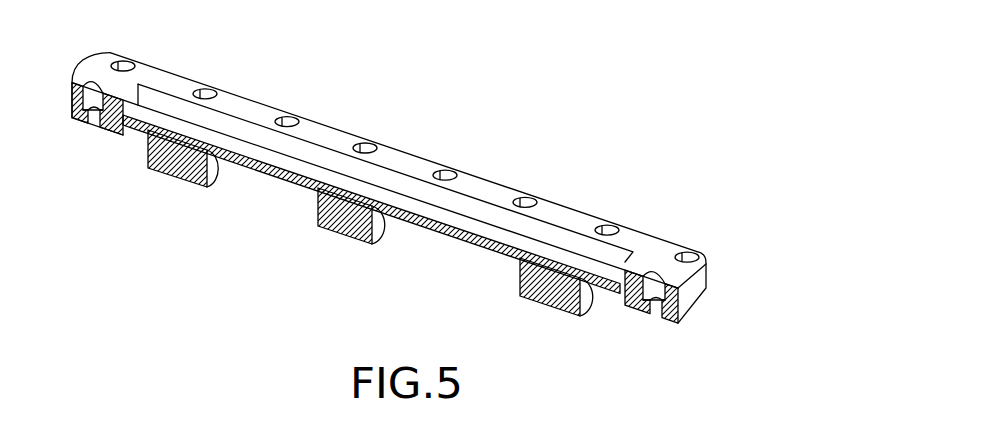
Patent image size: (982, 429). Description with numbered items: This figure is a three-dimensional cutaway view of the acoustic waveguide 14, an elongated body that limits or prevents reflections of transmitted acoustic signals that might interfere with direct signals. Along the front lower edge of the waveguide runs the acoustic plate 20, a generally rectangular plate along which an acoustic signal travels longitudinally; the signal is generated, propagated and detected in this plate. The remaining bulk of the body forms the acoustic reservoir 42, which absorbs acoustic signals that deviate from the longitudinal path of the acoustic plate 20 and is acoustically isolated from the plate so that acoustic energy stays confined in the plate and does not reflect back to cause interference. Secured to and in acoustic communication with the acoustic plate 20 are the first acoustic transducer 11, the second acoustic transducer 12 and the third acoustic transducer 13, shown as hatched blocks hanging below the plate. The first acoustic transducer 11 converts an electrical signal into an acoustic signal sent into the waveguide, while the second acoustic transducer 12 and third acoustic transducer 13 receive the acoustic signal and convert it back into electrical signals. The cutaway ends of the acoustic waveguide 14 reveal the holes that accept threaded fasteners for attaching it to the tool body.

The first acoustic transducer 11 is at (176, 178).
The second acoustic transducer 12 is at (347, 223).
The third acoustic transducer 13 is at (555, 292).
The acoustic waveguide 14 is at (491, 185).
The acoustic plate 20 is at (218, 131).
The acoustic reservoir 42 is at (405, 161).